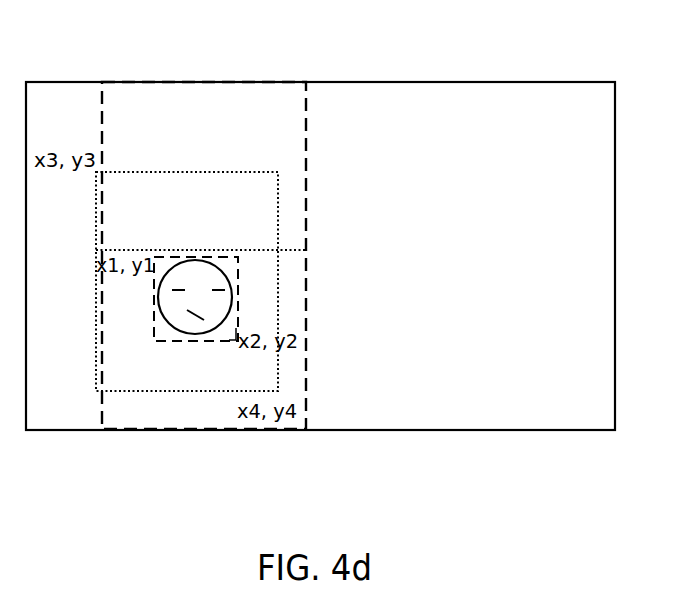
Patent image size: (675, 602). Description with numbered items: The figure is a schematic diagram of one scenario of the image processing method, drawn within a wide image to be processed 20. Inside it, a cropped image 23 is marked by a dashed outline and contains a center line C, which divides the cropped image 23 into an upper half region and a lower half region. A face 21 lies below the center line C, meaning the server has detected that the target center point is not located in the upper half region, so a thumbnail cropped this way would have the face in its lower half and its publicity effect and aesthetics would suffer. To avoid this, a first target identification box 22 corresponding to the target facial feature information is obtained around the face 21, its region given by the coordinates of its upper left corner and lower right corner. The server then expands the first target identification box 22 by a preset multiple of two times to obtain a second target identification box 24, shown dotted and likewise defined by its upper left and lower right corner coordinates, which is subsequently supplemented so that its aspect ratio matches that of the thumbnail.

The display screen 20 is at (283, 26).
The face 21 is at (195, 340).
The first target identification box 22 is at (215, 341).
The cropped image 23 is at (307, 145).
The second target identification box 24 is at (135, 172).
The center line C is at (293, 250).